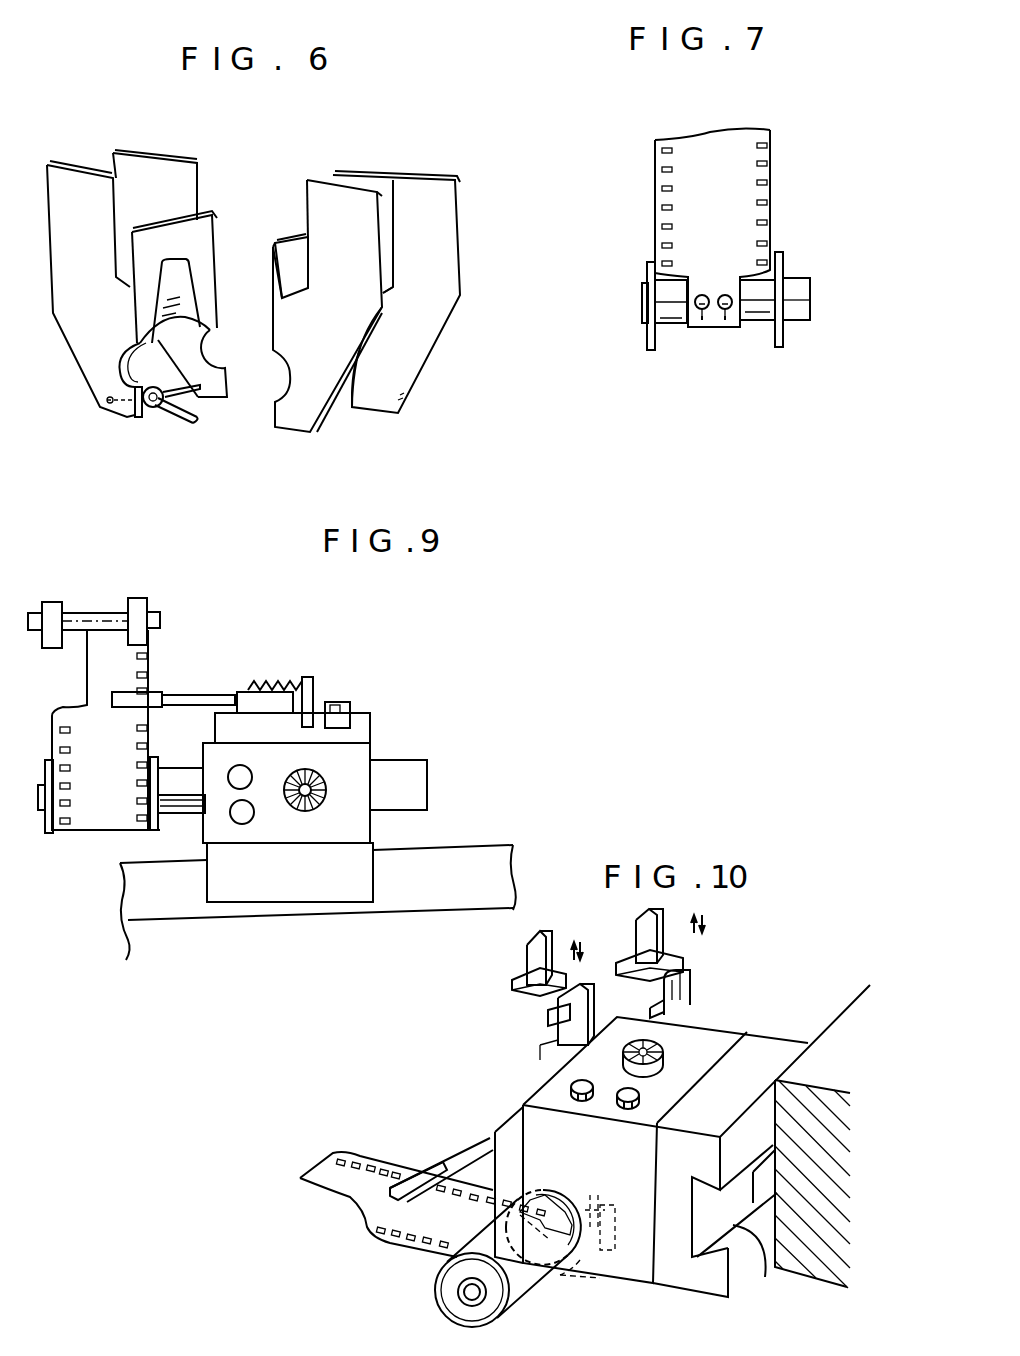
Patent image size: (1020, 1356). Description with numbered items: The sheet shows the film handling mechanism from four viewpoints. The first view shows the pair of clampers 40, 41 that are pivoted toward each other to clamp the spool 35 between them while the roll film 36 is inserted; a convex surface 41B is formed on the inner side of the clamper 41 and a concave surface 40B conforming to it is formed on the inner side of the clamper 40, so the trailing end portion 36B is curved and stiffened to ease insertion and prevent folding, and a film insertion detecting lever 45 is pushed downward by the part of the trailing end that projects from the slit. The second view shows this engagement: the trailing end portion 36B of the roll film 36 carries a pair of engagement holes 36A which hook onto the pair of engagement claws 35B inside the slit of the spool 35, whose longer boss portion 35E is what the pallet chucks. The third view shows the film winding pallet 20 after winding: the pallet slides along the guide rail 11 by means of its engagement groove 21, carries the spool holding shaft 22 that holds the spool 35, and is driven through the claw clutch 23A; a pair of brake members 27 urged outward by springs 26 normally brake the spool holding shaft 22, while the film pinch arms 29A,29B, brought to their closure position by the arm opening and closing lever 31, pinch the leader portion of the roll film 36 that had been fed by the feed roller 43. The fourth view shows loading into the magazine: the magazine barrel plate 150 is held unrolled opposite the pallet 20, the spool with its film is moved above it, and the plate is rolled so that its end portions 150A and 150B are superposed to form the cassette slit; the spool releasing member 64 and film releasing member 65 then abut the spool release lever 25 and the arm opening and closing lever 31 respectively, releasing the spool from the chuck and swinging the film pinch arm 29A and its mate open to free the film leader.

In FIG. 6, the clamper 40 is at (92, 332).
In FIG. 6, the concave surface 40B is at (173, 290).
In FIG. 6, the clamper 41 is at (313, 377).
In FIG. 6, the convex surface 41B is at (267, 327).
In FIG. 6, the film insertion detecting lever 45 is at (177, 418).
In FIG. 7, the roll film 36 is at (650, 193).
In FIG. 9, the roll film 36 is at (100, 667).
In FIG. 7, the engagement holes 36A is at (725, 294).
In FIG. 7, the trailing end portion 36B is at (688, 330).
In FIG. 7, the spool 35 is at (767, 342).
In FIG. 9, the spool 35 is at (42, 810).
In FIG. 7, the engagement claws 35B is at (725, 318).
In FIG. 7, the longer boss portion 35E is at (797, 318).
In FIG. 9, the feed roller 43 is at (132, 594).
In FIG. 9, the film pinch arms 29A,29B is at (162, 690).
In FIG. 10, the film pinch arm 29A is at (410, 1100).
In FIG. 9, the film winding pallet 20 is at (385, 733).
In FIG. 10, the film winding pallet 20 is at (718, 1012).
In FIG. 9, the spool holding shaft 22 is at (185, 800).
In FIG. 9, the brake members 27 is at (247, 813).
In FIG. 9, the claw clutch 23A is at (313, 811).
In FIG. 10, the claw clutch 23A is at (676, 1034).
In FIG. 9, the guide rail 11 is at (447, 867).
In FIG. 10, the guide rail 11 is at (846, 1037).
In FIG. 10, the film releasing member 65 is at (523, 967).
In FIG. 10, the spool releasing member 64 is at (664, 948).
In FIG. 10, the spool release lever 25 is at (683, 981).
In FIG. 10, the arm opening and closing lever 31 is at (557, 1004).
In FIG. 10, the springs 26 is at (627, 1087).
In FIG. 10, the engagement groove 21 is at (734, 1222).
In FIG. 10, the magazine barrel plate 150 is at (433, 1313).
In FIG. 10, the end portion of magazine barrel plate 150A is at (420, 1248).
In FIG. 10, the end portion of magazine barrel plate 150B is at (583, 1170).